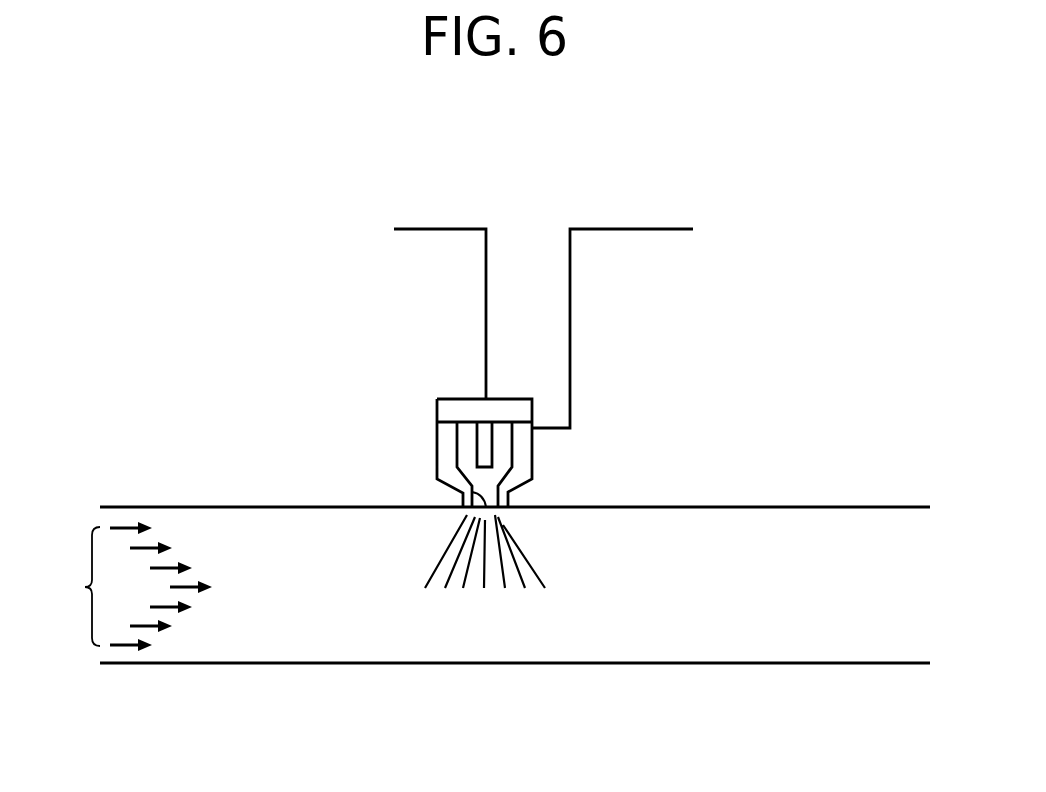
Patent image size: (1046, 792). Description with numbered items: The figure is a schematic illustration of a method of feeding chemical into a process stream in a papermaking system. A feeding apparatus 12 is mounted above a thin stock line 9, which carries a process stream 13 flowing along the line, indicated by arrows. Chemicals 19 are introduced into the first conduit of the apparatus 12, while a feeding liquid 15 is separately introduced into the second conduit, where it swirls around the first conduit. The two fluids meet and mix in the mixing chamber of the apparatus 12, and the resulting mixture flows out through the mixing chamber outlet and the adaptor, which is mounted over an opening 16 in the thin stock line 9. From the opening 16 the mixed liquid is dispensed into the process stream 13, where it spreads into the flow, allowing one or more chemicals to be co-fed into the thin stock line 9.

The thin stock line 9 is at (770, 663).
The apparatus 12 is at (532, 457).
The process stream 13 is at (85, 588).
The feeding liquid 15 is at (637, 228).
The opening 16 is at (472, 493).
The chemicals 19 is at (446, 228).